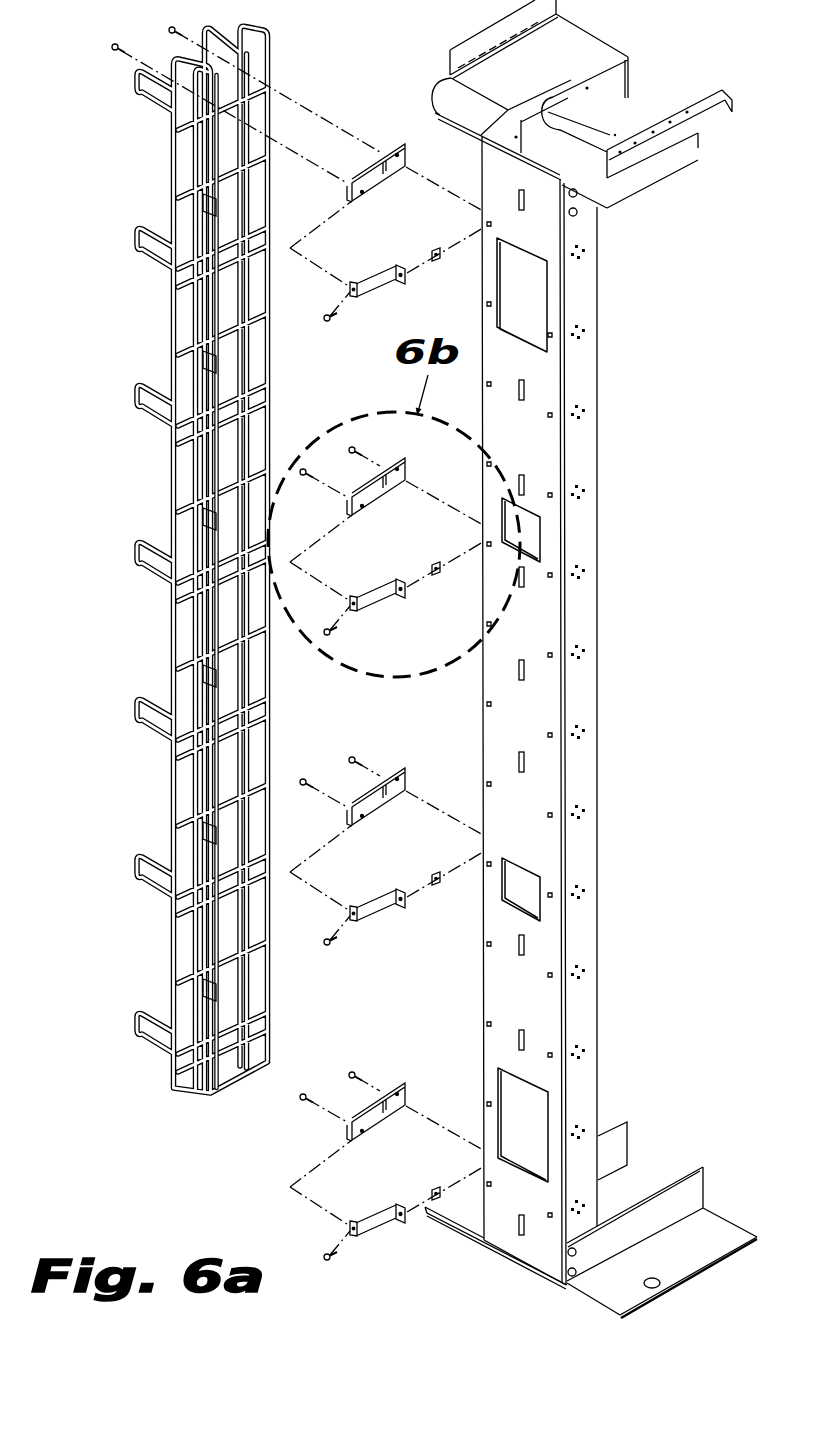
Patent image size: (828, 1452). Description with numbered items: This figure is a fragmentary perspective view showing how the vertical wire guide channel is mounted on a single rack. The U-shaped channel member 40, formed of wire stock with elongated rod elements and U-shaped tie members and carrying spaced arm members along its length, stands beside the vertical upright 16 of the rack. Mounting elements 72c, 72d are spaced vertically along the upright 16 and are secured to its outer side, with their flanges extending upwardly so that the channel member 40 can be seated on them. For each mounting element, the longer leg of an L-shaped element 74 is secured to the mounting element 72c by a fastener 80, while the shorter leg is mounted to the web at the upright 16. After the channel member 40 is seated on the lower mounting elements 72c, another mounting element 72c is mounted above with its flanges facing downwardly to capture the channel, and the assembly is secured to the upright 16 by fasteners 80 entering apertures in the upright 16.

The upright 16 is at (618, 412).
The U-shaped channel member 40 is at (106, 404).
The mounting element 72c is at (390, 489).
The mounting element 72d is at (383, 175).
The L-shaped element 74 is at (370, 595).
The fastener 80 is at (356, 449).